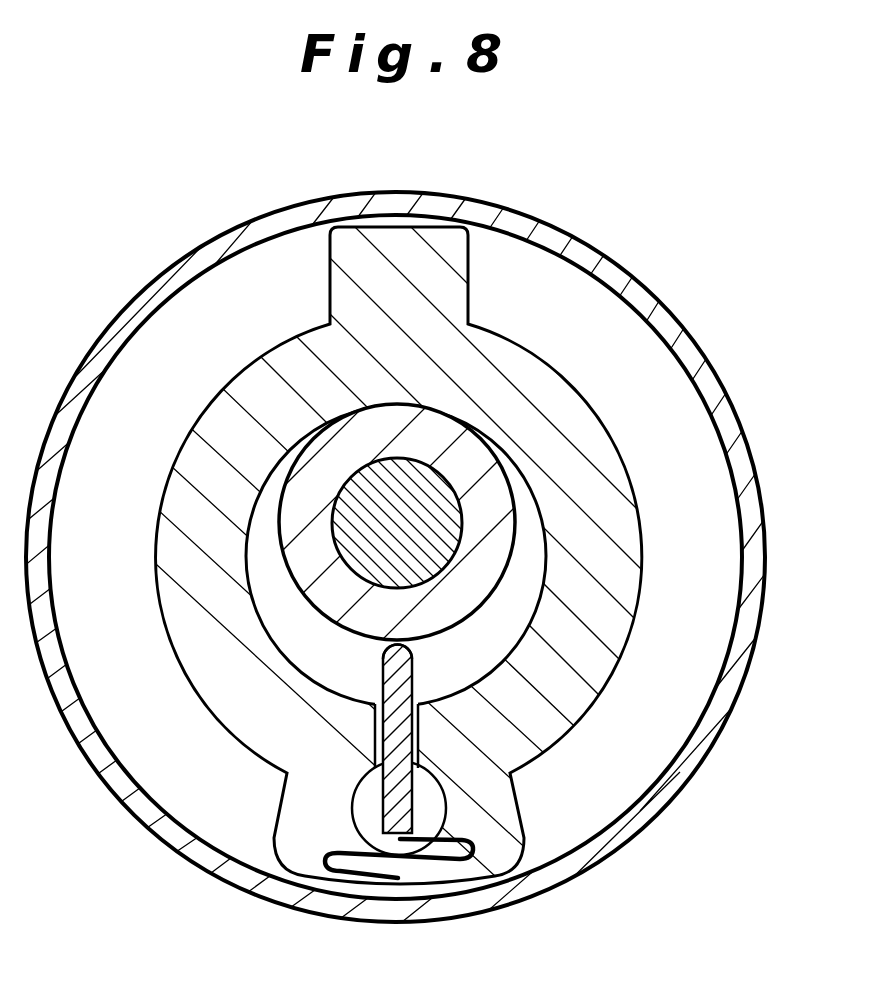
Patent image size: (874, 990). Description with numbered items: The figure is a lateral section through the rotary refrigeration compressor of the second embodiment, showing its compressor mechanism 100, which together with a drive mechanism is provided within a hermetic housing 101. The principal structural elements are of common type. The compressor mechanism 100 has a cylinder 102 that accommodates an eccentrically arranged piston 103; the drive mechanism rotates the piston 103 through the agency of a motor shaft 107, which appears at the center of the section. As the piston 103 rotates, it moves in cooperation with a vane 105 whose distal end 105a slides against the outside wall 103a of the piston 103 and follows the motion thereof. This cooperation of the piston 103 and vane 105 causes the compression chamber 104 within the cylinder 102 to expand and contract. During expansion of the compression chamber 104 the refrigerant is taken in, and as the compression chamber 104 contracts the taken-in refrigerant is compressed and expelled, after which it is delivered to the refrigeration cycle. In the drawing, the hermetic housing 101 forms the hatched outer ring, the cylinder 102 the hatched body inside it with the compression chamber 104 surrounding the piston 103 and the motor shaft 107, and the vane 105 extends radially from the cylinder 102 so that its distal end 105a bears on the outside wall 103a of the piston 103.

The compressor mechanism 100 is at (416, 495).
The hermetic housing 101 is at (683, 767).
The cylinder 102 is at (577, 670).
The piston 103 is at (487, 510).
The outside wall of the piston 103a is at (315, 607).
The compression chamber 104 is at (523, 562).
The vane 105 is at (415, 757).
The distal end of the vane 105a is at (392, 650).
The shaft 107 is at (415, 490).